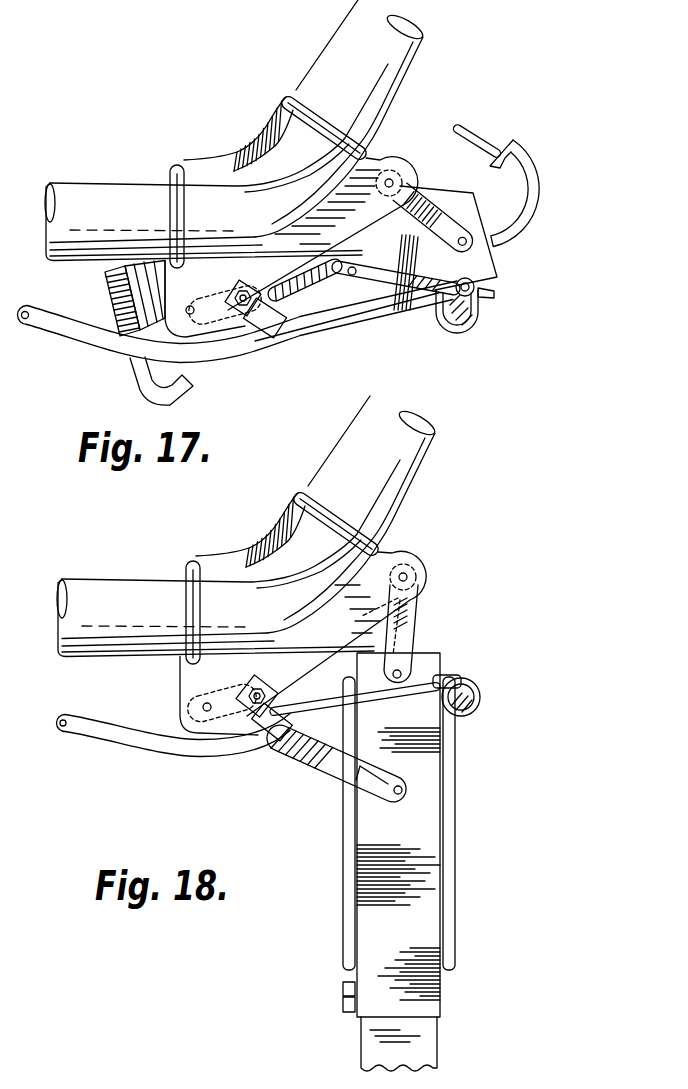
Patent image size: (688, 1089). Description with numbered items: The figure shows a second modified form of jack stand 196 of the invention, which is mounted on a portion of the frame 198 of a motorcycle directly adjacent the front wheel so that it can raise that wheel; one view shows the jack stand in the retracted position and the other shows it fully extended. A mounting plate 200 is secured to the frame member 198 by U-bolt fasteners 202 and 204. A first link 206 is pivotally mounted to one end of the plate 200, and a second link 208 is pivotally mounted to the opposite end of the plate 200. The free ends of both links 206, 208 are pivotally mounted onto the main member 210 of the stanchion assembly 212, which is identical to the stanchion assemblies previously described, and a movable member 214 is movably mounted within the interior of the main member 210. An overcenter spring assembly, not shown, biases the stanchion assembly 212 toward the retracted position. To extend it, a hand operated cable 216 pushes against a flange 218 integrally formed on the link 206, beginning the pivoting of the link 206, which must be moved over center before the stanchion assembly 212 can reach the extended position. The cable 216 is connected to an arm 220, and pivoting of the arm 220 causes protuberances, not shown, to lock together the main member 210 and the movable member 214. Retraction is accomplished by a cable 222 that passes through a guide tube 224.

In FIG. 17, the second modified form of jack stand 196 is at (448, 74).
In FIG. 18, the second modified form of jack stand 196 is at (442, 560).
In FIG. 17, the frame 198 is at (349, 38).
In FIG. 18, the frame 198 is at (347, 465).
In FIG. 17, the mounting plate 200 is at (384, 152).
In FIG. 18, the mounting plate 200 is at (182, 688).
In FIG. 17, the U-bolt fastener 202 is at (176, 165).
In FIG. 18, the U-bolt fastener 202 is at (196, 567).
In FIG. 17, the U-bolt fastener 204 is at (287, 103).
In FIG. 18, the U-bolt fastener 204 is at (300, 510).
In FIG. 17, the first link 206 is at (308, 340).
In FIG. 18, the first link 206 is at (302, 770).
In FIG. 17, the second link 208 is at (418, 186).
In FIG. 18, the second link 208 is at (414, 617).
In FIG. 17, the main member 210 is at (382, 298).
In FIG. 18, the main member 210 is at (430, 824).
In FIG. 17, the stanchion assembly 212 is at (503, 263).
In FIG. 18, the stanchion assembly 212 is at (462, 898).
In FIG. 18, the movable member 214 is at (430, 1050).
In FIG. 17, the hand operated cable 216 is at (381, 282).
In FIG. 18, the hand operated cable 216 is at (425, 700).
In FIG. 17, the flange 218 is at (343, 286).
In FIG. 18, the flange 218 is at (350, 790).
In FIG. 17, the arm 220 is at (490, 291).
In FIG. 18, the arm 220 is at (490, 696).
In FIG. 17, the cable 222 is at (476, 133).
In FIG. 18, the cable 222 is at (400, 545).
In FIG. 17, the guide tube 224 is at (523, 158).
In FIG. 18, the guide tube 224 is at (428, 582).